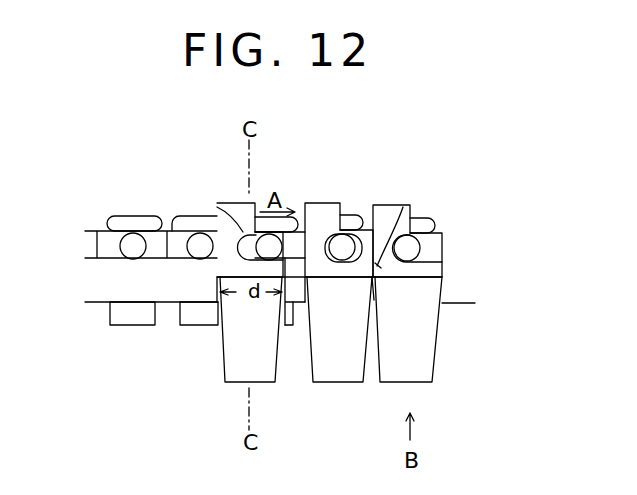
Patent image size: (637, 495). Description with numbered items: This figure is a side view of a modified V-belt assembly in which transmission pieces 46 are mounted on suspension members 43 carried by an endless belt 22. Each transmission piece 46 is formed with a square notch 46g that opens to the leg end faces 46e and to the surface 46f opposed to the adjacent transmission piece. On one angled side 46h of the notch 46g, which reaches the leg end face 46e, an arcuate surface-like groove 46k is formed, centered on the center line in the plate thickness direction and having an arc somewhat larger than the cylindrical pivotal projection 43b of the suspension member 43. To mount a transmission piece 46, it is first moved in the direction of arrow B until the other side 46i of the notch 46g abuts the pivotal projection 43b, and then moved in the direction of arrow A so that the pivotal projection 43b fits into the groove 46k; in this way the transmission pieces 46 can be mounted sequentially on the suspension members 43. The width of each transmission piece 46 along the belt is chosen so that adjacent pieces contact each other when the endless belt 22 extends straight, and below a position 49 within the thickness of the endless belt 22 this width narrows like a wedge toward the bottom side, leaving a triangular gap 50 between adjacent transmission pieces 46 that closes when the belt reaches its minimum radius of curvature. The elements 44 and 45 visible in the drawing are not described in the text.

The endless belt 22 is at (97, 277).
The suspension member 43 is at (107, 238).
The cylindrical pivotal projection 43b is at (141, 241).
The guide block 44 is at (125, 325).
The link plate 45 is at (132, 217).
The transmission piece 46 is at (338, 383).
The leg end face 46e is at (328, 204).
The surface opposed to the adjacent transmission piece 46f is at (403, 207).
The square notch 46g is at (353, 215).
The side of the notch 46h is at (257, 216).
The other side of the notch 46i is at (443, 250).
The arcuate surface-like groove 46k is at (217, 204).
The position above the lower bottom surface of the endless belt 49 is at (443, 277).
The triangular gap 50 is at (373, 370).